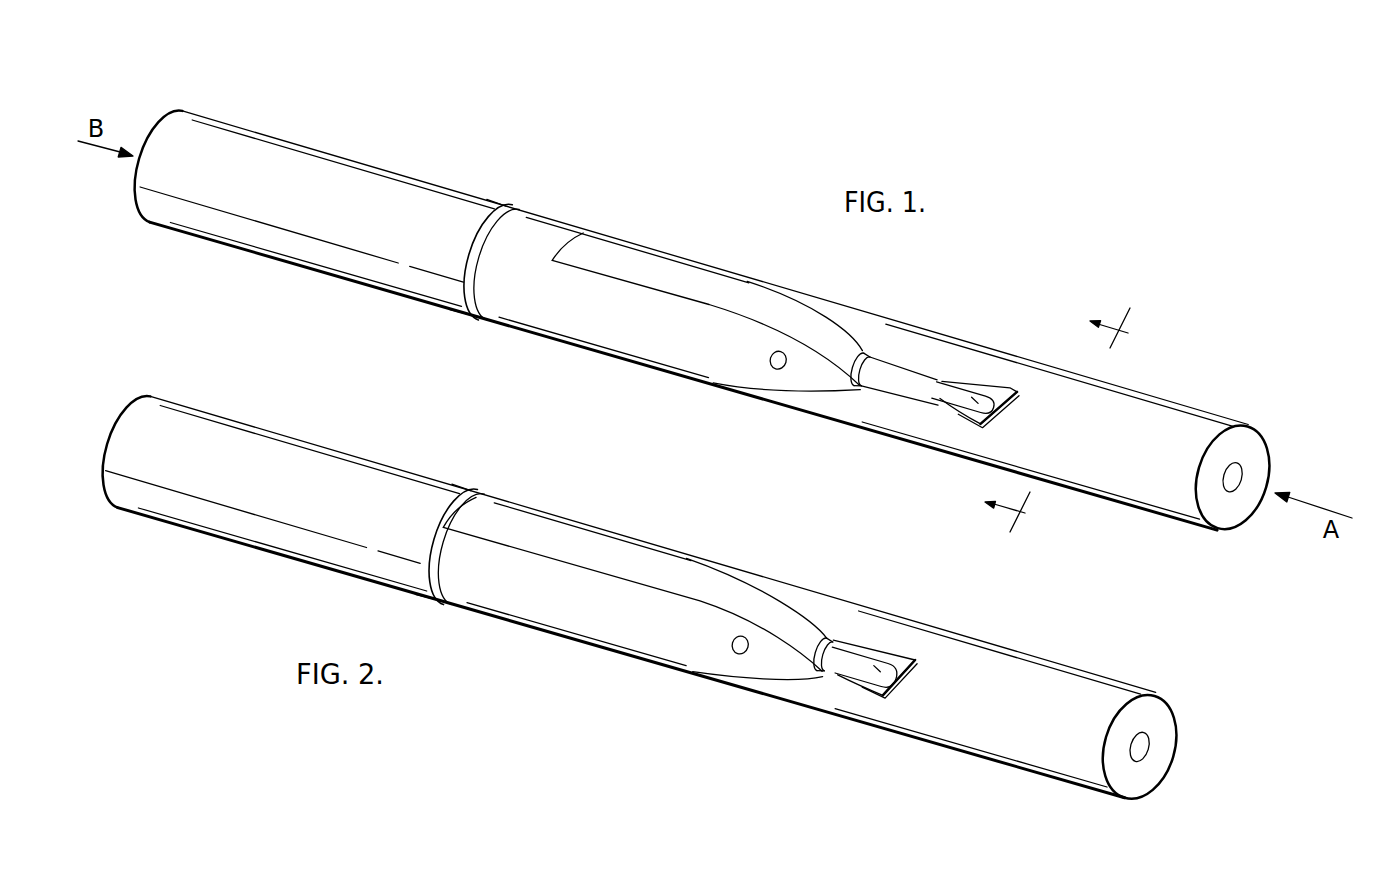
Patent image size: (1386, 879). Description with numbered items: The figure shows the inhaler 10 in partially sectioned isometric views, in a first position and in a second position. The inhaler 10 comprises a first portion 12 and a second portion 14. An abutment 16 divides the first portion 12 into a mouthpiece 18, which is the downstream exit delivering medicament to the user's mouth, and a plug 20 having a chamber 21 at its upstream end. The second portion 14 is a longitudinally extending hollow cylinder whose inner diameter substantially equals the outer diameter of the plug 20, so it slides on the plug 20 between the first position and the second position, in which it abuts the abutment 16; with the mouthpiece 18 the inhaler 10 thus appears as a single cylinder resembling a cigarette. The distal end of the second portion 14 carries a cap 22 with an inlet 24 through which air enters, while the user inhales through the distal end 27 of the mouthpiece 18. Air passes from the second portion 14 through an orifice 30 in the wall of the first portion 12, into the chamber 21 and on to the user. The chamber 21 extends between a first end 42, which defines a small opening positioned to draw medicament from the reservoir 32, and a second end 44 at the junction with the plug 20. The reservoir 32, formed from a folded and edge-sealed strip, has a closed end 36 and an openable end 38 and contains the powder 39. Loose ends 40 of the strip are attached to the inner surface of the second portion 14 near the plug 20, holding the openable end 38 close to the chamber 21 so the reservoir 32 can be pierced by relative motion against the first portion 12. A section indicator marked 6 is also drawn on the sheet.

In FIG. 1, the inhaler 10 is at (750, 255).
In FIG. 2, the inhaler 10 is at (717, 548).
In FIG. 1, the first portion 12 is at (313, 275).
In FIG. 2, the first portion 12 is at (305, 440).
In FIG. 1, the second portion 14 is at (884, 428).
In FIG. 2, the second portion 14 is at (938, 745).
In FIG. 1, the abutment 16 is at (508, 205).
In FIG. 2, the abutment 16 is at (470, 492).
In FIG. 1, the mouthpiece 18 is at (360, 165).
In FIG. 2, the mouthpiece 18 is at (287, 553).
In FIG. 1, the plug 20 is at (592, 358).
In FIG. 2, the plug 20 is at (545, 635).
In FIG. 1, the chamber 21 is at (715, 386).
In FIG. 2, the chamber 21 is at (690, 670).
In FIG. 1, the cap 22 is at (1246, 496).
In FIG. 2, the cap 22 is at (1160, 715).
In FIG. 1, the inlet 24 is at (1226, 490).
In FIG. 2, the inlet 24 is at (1150, 748).
In FIG. 1, the distal end 27 is at (143, 126).
In FIG. 2, the distal end 27 is at (104, 407).
In FIG. 1, the orifice 30 is at (776, 369).
In FIG. 2, the orifice 30 is at (742, 656).
In FIG. 1, the reservoir 32 is at (936, 377).
In FIG. 2, the reservoir 32 is at (827, 675).
In FIG. 1, the closed end 36 is at (985, 430).
In FIG. 2, the closed end 36 is at (930, 640).
In FIG. 1, the openable end 38 is at (905, 358).
In FIG. 1, the powder 39 is at (972, 393).
In FIG. 2, the powder 39 is at (878, 660).
In FIG. 1, the loose ends 40 is at (633, 247).
In FIG. 2, the loose ends 40 is at (590, 530).
In FIG. 1, the first end 42 is at (868, 352).
In FIG. 2, the first end 42 is at (828, 636).
In FIG. 1, the second end 44 is at (653, 350).
In FIG. 2, the second end 44 is at (640, 645).
In FIG. 1, the section line 6 is at (1119, 328).
In FIG. 2, the section line 6 is at (1016, 511).